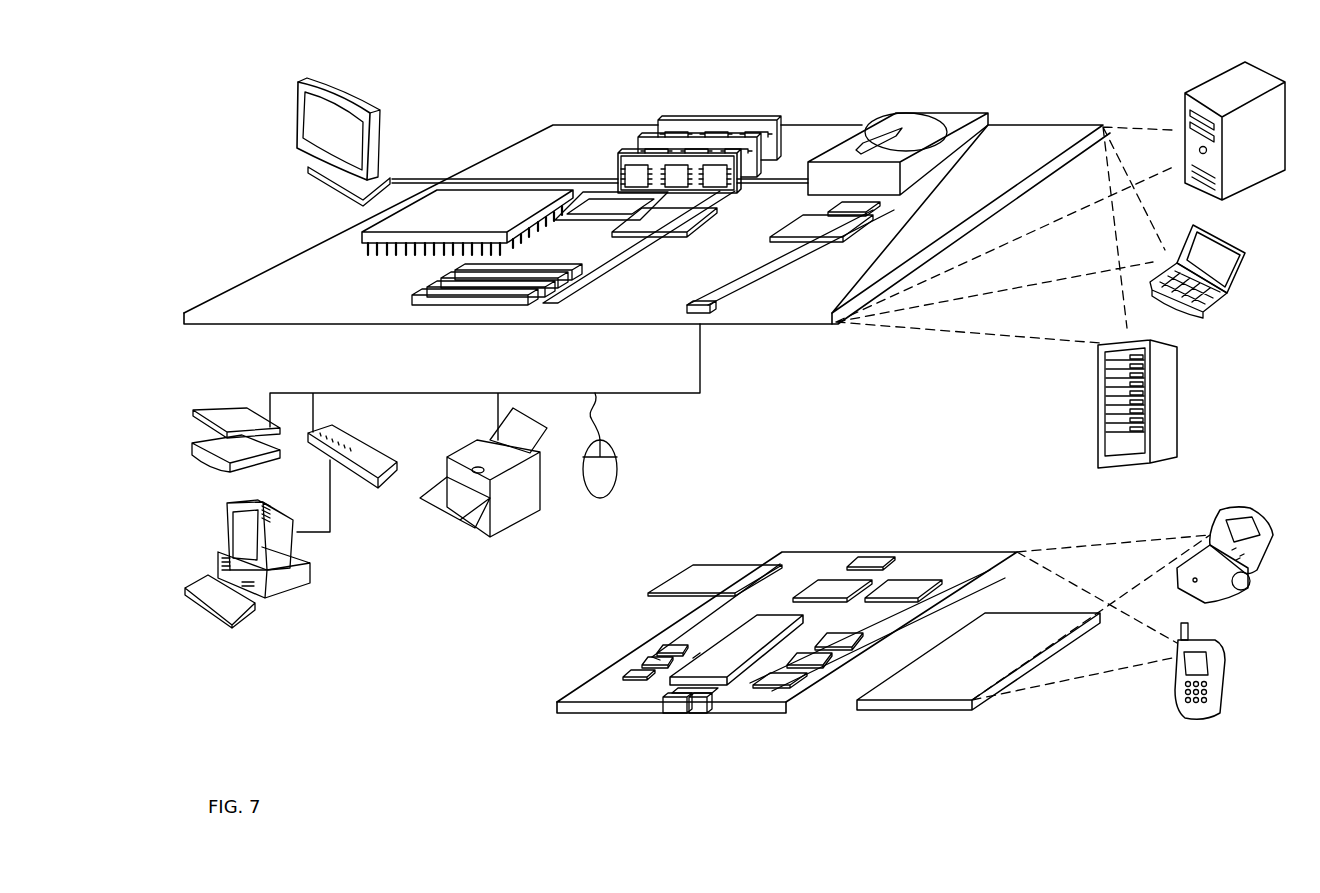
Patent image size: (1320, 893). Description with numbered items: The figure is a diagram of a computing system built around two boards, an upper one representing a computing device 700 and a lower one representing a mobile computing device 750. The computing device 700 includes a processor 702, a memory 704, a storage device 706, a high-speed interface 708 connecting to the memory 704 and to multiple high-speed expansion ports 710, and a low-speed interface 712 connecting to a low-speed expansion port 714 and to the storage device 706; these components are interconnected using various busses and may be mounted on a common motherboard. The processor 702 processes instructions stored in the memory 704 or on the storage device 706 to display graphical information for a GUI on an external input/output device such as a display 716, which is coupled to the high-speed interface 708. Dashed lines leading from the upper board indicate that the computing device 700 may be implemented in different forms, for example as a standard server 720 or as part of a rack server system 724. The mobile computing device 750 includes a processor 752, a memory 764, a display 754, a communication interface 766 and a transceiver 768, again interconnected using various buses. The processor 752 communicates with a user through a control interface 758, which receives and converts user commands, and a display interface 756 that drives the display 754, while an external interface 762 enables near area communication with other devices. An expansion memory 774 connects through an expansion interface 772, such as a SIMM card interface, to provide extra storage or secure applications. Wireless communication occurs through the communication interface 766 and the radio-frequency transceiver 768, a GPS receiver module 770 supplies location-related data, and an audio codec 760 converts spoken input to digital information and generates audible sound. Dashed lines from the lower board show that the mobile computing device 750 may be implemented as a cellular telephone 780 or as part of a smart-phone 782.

The computing device 700 is at (481, 97).
The processor 702 is at (368, 237).
The memory 704 is at (672, 119).
The storage device 706 is at (887, 110).
The high-speed interface 708 is at (625, 232).
The high-speed expansion ports 710 is at (415, 297).
The low-speed interface 712 is at (798, 226).
The low-speed expansion port 714 is at (700, 314).
The display 716 is at (300, 82).
The standard server 720 is at (1185, 125).
The rack server system 724 is at (1098, 430).
The mobile computing device 750 is at (536, 711).
The processor 752 is at (722, 680).
The display 754 is at (945, 690).
The display interface 756 is at (778, 686).
The control interface 758 is at (813, 663).
The audio codec 760 is at (836, 645).
The external interface 762 is at (685, 703).
The memory 764 is at (640, 673).
The communication interface 766 is at (830, 590).
The transceiver 768 is at (905, 590).
The GPS receiver module 770 is at (872, 558).
The expansion interface 772 is at (776, 560).
The expansion memory 774 is at (700, 566).
The cellular telephone 780 is at (1222, 510).
The smart-phone 782 is at (1176, 680).